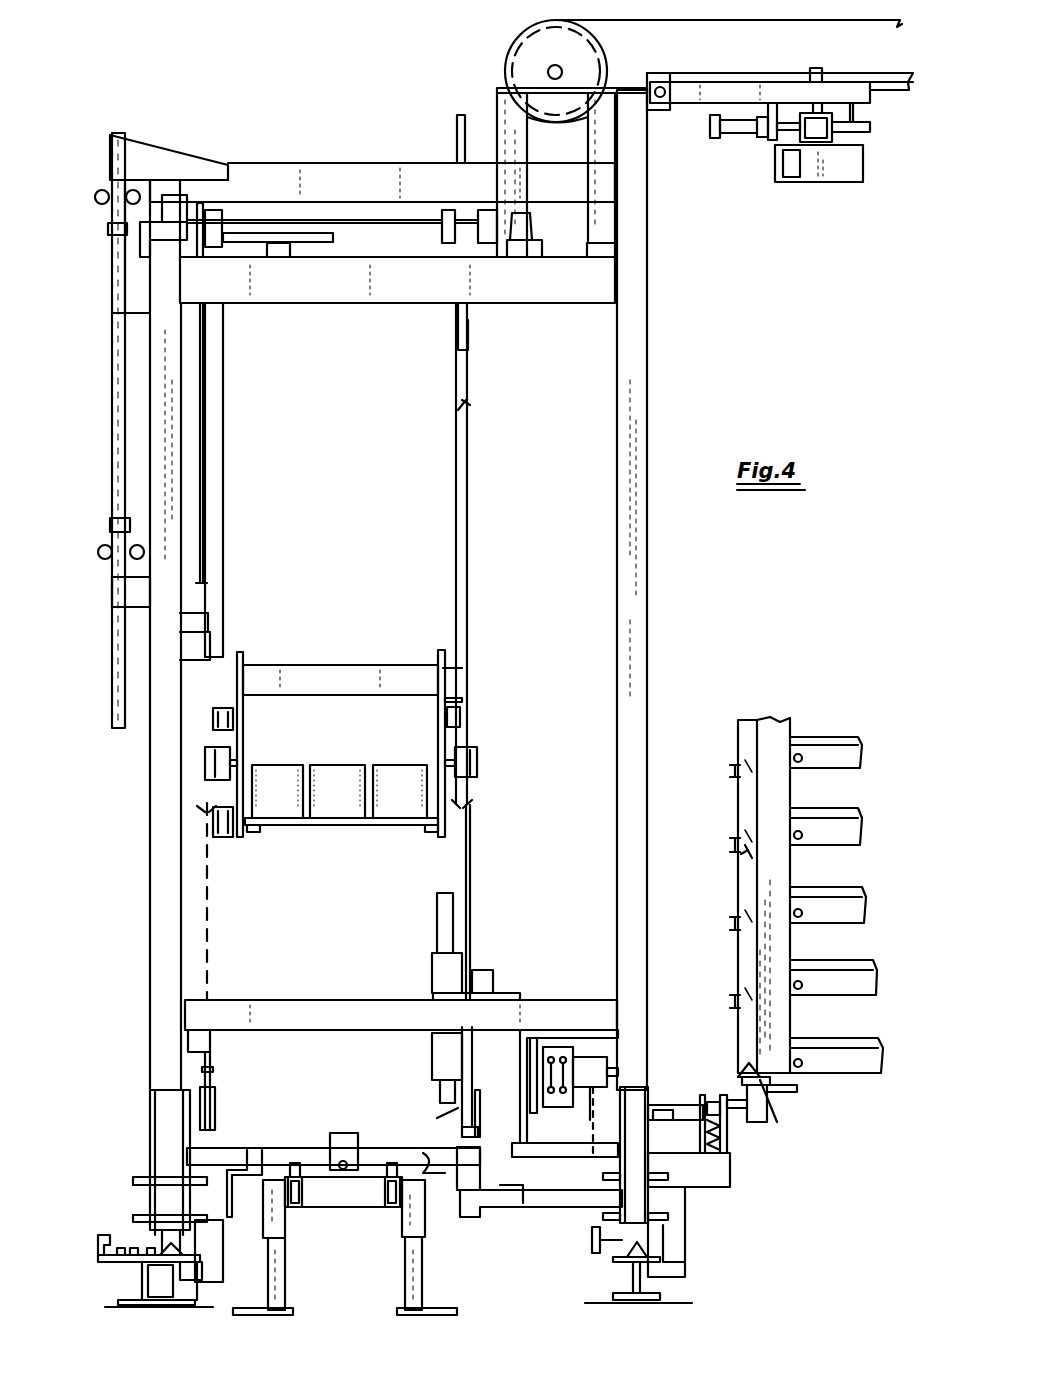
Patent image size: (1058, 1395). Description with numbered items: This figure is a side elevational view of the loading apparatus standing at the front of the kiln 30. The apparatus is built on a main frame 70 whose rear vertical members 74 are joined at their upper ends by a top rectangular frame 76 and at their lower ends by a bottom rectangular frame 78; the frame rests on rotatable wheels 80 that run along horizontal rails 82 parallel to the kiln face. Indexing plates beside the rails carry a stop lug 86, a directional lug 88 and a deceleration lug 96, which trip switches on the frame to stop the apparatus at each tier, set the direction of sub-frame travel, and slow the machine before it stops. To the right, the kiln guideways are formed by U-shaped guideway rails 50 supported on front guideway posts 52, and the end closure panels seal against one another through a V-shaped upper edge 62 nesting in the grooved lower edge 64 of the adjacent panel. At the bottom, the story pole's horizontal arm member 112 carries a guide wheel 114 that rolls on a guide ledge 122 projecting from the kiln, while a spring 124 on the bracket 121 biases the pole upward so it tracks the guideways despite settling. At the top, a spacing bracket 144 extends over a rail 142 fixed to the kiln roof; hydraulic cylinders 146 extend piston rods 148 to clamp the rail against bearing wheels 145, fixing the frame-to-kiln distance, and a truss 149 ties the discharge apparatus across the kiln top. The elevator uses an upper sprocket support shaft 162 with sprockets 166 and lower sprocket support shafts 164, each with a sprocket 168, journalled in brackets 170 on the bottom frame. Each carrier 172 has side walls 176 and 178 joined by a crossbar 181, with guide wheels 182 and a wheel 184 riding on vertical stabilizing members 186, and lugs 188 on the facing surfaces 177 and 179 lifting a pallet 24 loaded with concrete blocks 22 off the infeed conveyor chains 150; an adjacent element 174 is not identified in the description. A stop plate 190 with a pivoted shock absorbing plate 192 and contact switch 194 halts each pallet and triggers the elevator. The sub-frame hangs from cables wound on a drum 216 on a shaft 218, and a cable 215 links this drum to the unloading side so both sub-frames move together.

The concrete blocks 22 is at (330, 775).
The pallets 24 is at (345, 827).
The kiln 30 is at (714, 838).
The guideway rails 50 is at (812, 738).
The front guideway posts 52 is at (782, 872).
The upper edge 62 is at (738, 770).
The lower edge 64 is at (757, 840).
The main frame 70 is at (160, 850).
The rear vertical members 74 is at (647, 585).
The top rectangular frame 76 is at (337, 300).
The bottom rectangular frame 78 is at (290, 1000).
The rotatable wheels 80 is at (650, 1245).
The rails 82 is at (627, 1250).
The stop lug 86 is at (143, 1265).
The directional lug 88 is at (115, 1245).
The deceleration lug 96 is at (133, 1248).
The arm member 112 is at (688, 1105).
The guide wheel 114 is at (725, 1135).
The bracket 121 is at (703, 1172).
The guide ledge 122 is at (768, 1120).
The spring 124 is at (716, 1140).
The rail 142 is at (820, 110).
The spacing bracket 144 is at (724, 88).
The bearing wheels 145 is at (860, 130).
The hydraulic cylinders 146 is at (737, 130).
The piston rod 148 is at (785, 118).
The truss 149 is at (682, 75).
The infeed conveyor chains 150 is at (298, 1168).
The upper sprocket support shaft 162 is at (278, 230).
The lower sprocket support shafts 164 is at (216, 1098).
The sprockets 166 is at (470, 340).
The sprocket 168 is at (216, 1128).
The brackets 170 is at (472, 892).
The carrier 172 is at (474, 671).
The block 174 is at (478, 762).
The side wall 176 is at (237, 692).
The facing surface 177 is at (243, 708).
The side wall 178 is at (464, 702).
The facing surface 179 is at (440, 732).
The crossbar 181 is at (320, 665).
The guide wheels 182 is at (228, 840).
The wheel 184 is at (462, 718).
The vertical stabilizing members 186 is at (468, 586).
The lugs 188 is at (260, 832).
The stop plate 190 is at (286, 1150).
The shock absorbing plate 192 is at (352, 1133).
The contact switch 194 is at (345, 1170).
The cable 215 is at (622, 18).
The drum 216 is at (520, 55).
The shaft 218 is at (545, 73).